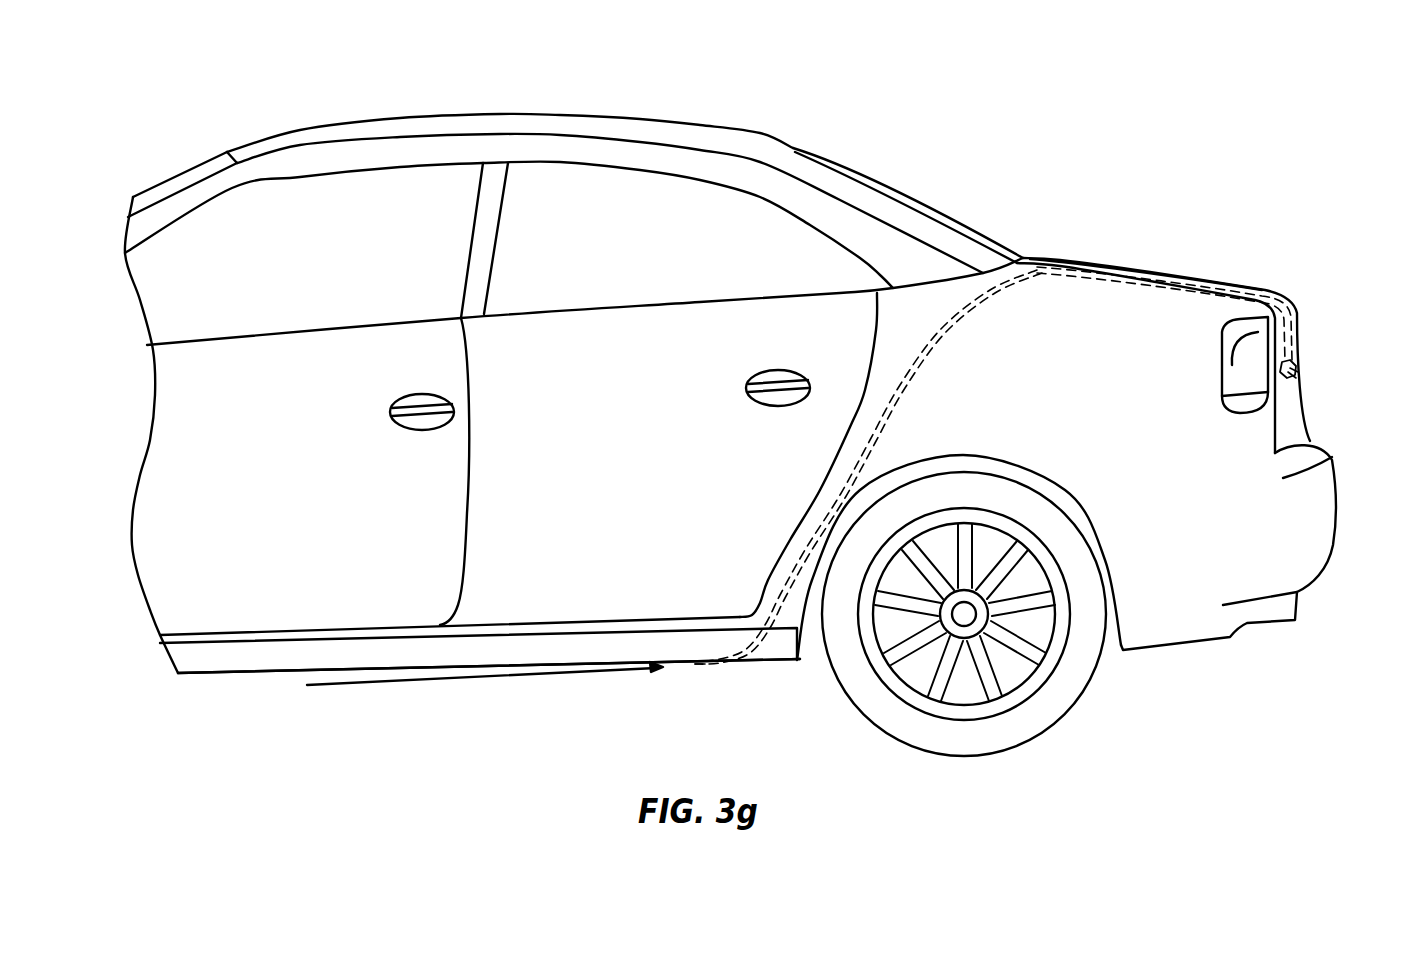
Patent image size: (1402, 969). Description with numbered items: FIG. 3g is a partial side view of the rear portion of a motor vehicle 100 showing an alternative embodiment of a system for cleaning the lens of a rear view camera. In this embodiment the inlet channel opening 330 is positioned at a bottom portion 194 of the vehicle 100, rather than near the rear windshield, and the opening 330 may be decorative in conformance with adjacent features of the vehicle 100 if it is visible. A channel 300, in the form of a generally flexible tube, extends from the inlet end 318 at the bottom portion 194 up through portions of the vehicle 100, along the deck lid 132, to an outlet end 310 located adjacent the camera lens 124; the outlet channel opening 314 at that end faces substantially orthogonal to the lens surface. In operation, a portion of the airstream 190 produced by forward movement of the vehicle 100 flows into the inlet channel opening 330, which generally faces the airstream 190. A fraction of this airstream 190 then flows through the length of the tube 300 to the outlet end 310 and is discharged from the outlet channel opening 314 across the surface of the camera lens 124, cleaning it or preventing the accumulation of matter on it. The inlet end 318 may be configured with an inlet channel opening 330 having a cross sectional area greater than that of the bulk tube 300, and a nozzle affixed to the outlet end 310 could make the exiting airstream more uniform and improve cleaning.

The motor vehicle 100 is at (895, 132).
The channel 300 is at (1077, 260).
The deck lid 132 is at (1225, 280).
The outlet end 310 is at (1295, 368).
The outlet channel opening 314 is at (1297, 370).
The camera lens 124 is at (1295, 374).
The inlet channel opening 330 is at (681, 664).
The inlet end 318 is at (685, 666).
The airstream 190 is at (440, 687).
The bottom portion 194 is at (553, 717).